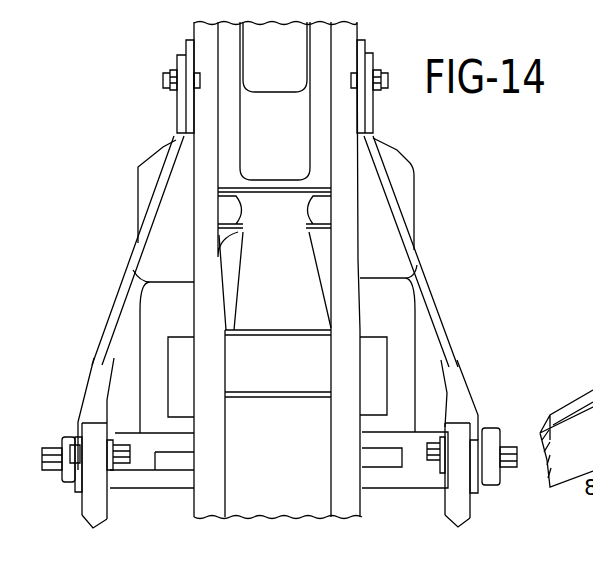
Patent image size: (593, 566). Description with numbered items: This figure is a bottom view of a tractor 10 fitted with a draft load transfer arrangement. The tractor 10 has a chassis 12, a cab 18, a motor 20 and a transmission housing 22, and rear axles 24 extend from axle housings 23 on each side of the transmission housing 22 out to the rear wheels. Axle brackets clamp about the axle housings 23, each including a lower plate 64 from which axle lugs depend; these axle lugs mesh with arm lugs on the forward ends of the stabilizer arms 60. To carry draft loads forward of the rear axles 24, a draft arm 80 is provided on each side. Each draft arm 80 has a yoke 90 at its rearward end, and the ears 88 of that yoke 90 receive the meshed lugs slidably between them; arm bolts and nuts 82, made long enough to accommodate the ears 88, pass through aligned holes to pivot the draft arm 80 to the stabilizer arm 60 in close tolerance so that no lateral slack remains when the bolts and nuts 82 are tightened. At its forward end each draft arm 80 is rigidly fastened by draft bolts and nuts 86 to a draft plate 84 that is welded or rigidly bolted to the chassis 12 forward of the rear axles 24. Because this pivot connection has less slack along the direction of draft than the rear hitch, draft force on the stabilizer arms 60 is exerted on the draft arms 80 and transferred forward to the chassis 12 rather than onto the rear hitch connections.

The tractor 10 is at (303, 500).
The chassis 12 is at (195, 33).
The cab 18 is at (180, 318).
The motor 20 is at (290, 130).
The transmission housing 22 is at (308, 356).
The axle housings 23 is at (180, 442).
The rear axles 24 is at (50, 449).
The stabilizer arms 60 is at (97, 505).
The lower plate 64 is at (100, 437).
The draft arms 80 is at (135, 268).
The arm bolts and nuts 82 is at (80, 487).
The draft plates 84 is at (190, 106).
The draft bolts and nuts 86 is at (195, 80).
The ears 88 is at (112, 473).
The yokes 90 is at (93, 413).